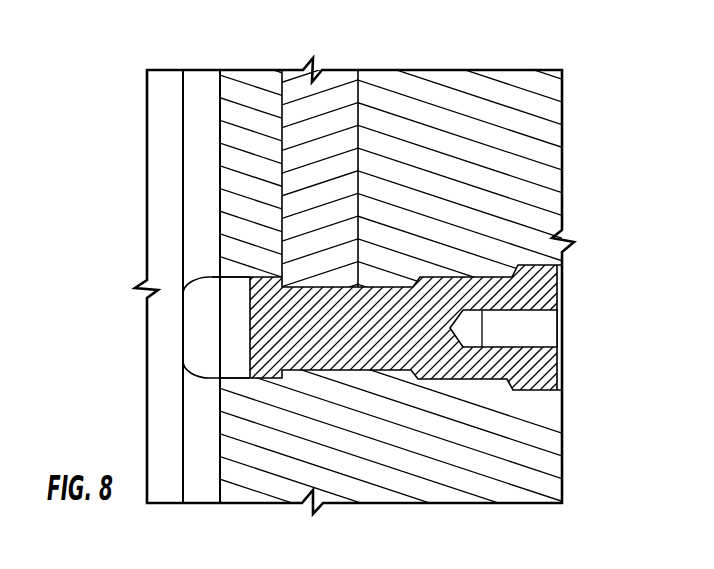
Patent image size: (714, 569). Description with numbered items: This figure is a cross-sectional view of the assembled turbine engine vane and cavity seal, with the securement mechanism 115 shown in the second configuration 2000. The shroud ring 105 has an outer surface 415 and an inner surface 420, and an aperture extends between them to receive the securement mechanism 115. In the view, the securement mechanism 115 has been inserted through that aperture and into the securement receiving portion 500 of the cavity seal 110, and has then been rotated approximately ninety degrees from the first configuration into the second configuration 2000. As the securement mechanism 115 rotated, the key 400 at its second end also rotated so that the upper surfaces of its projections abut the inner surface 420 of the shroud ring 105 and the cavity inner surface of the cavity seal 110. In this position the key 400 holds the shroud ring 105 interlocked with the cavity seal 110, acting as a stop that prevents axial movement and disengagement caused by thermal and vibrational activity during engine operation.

The second configuration 2000 is at (646, 68).
The shroud ring 105 is at (300, 88).
The cavity seal 110 is at (487, 90).
The outer surface 415 is at (357, 163).
The inner surface 420 is at (282, 225).
The key 400 is at (257, 288).
The securement mechanism 115 is at (550, 285).
The securement receiving portion 500 is at (208, 338).